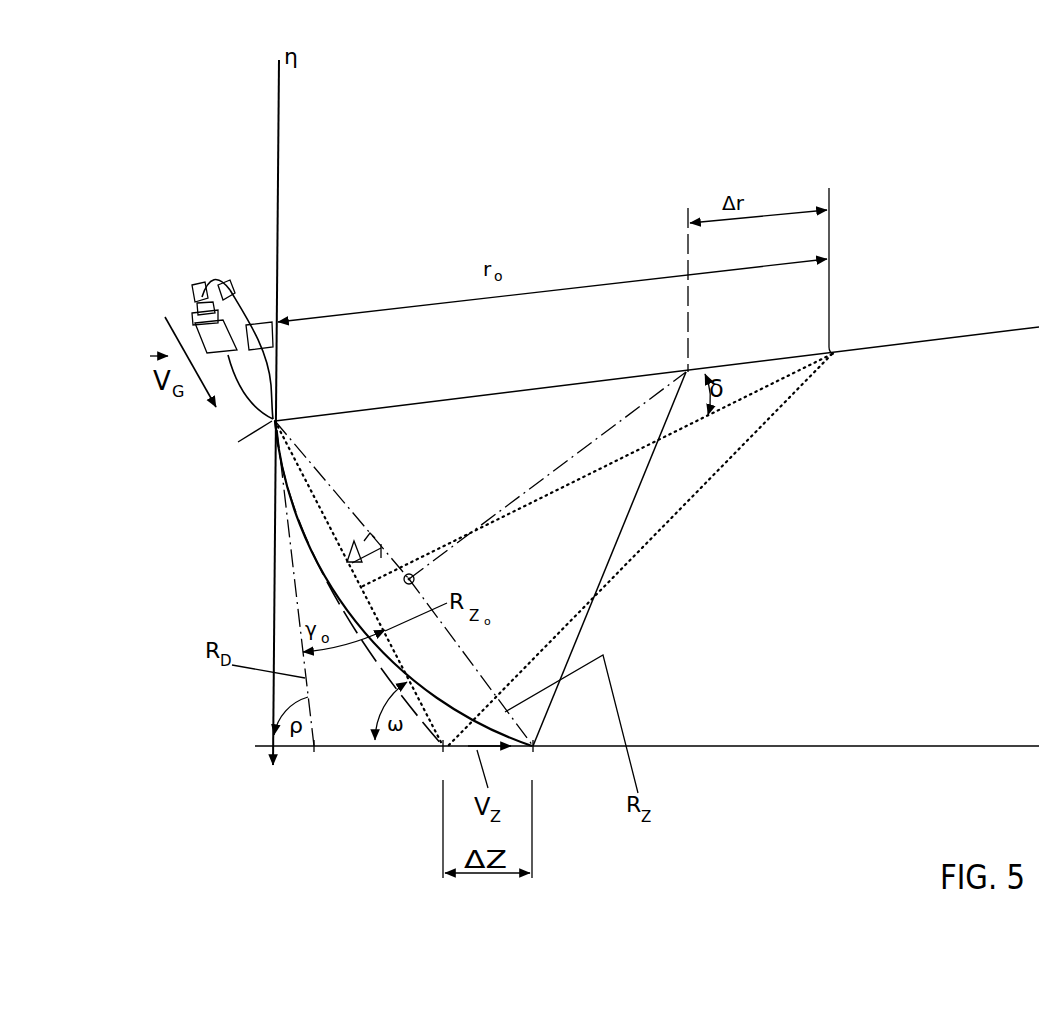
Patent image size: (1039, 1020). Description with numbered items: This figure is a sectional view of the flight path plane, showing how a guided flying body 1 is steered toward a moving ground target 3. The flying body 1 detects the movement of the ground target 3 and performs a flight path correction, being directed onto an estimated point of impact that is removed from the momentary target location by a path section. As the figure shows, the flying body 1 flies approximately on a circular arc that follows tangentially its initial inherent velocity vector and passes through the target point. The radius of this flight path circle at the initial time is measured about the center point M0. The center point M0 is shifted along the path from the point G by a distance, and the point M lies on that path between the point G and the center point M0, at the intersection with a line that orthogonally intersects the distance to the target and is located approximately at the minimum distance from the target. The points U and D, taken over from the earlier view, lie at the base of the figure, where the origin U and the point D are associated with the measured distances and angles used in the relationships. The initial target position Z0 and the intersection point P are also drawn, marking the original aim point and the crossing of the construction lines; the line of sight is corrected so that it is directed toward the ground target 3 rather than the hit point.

The flying body 1 is at (197, 311).
The ground target 3 is at (535, 748).
The point G is at (247, 438).
The point M is at (696, 290).
The center point M0 is at (845, 271).
The initial target position Z0 is at (447, 760).
The point D is at (314, 756).
The point U is at (260, 760).
The intersection point P is at (409, 579).